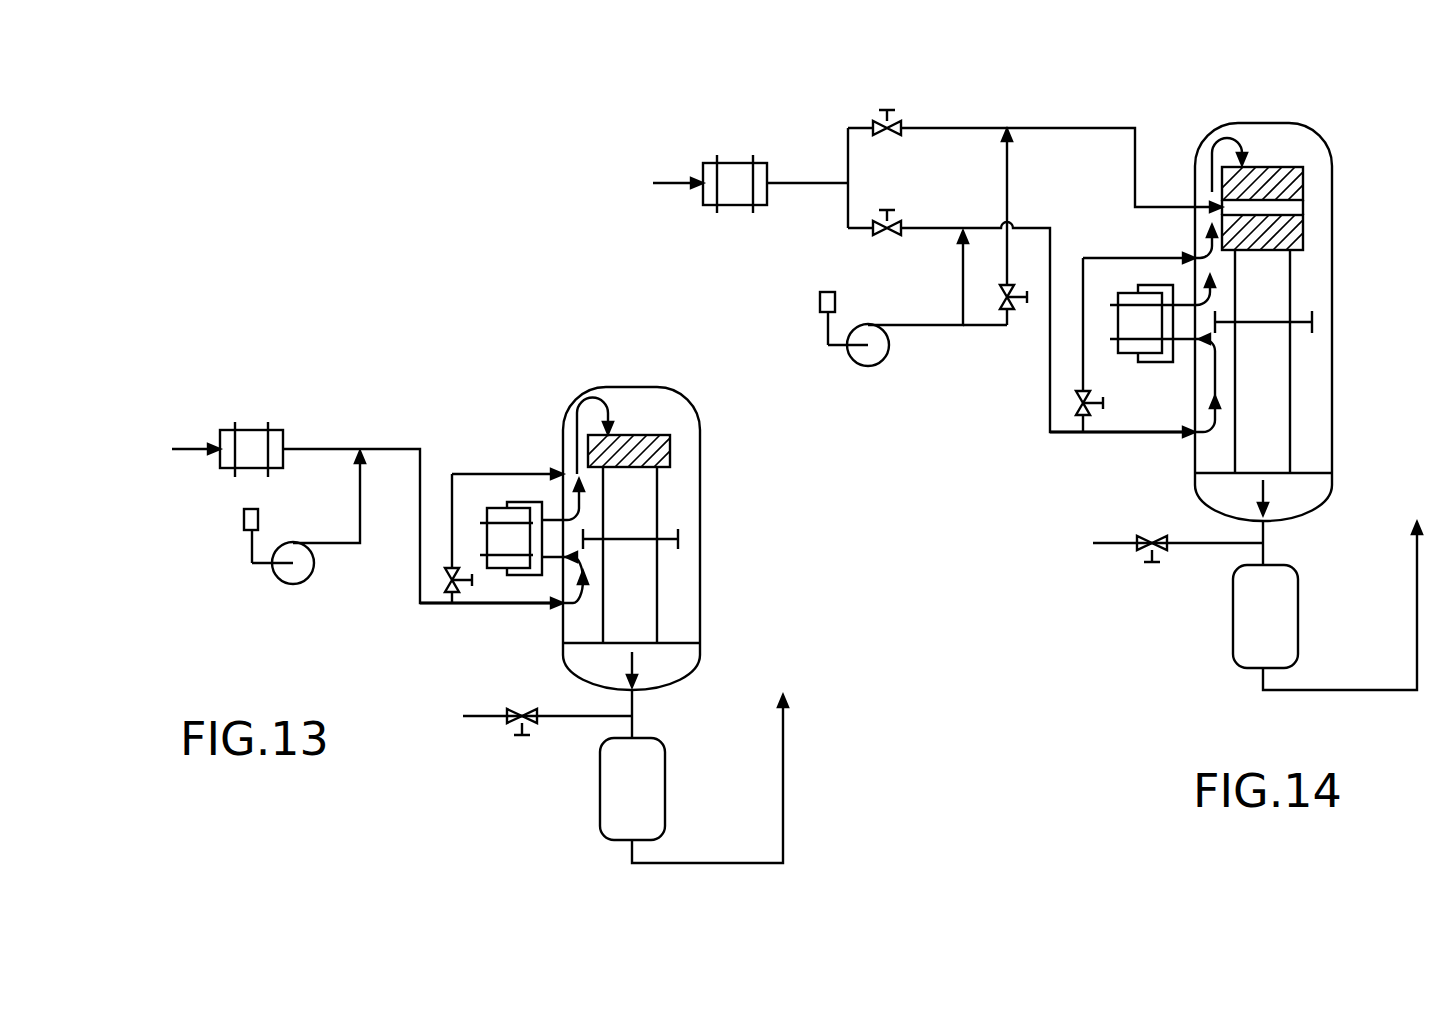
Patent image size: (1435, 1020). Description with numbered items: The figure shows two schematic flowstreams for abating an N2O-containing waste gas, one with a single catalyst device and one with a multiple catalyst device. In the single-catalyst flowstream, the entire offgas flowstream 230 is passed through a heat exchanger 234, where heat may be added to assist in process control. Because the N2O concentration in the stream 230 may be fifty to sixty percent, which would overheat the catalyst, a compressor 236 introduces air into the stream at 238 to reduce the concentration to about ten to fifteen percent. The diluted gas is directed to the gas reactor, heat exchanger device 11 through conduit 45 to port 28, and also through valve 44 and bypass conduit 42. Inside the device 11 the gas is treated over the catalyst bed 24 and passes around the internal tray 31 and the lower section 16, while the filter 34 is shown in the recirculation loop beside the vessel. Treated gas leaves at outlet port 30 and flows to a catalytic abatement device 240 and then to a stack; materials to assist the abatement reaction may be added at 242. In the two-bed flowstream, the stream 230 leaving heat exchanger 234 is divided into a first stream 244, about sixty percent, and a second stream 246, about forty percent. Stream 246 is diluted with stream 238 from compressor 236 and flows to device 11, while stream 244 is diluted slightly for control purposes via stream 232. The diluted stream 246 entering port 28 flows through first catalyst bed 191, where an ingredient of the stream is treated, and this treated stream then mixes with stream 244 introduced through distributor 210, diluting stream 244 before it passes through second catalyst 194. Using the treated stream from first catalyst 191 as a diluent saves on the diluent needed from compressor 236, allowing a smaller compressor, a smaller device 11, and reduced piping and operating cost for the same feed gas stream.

In FIG. 13, the gas reactor, heat exchanger device 11 is at (702, 563).
In FIG. 14, the gas reactor, heat exchanger device 11 is at (1335, 352).
In FIG. 13, the vessel bottom / lower outlet section 16 is at (683, 648).
In FIG. 14, the vessel bottom / lower outlet section 16 is at (1312, 477).
In FIG. 13, the catalyst bed / draft tube 24 is at (642, 468).
In FIG. 14, the catalyst bed / draft tube 24 is at (1275, 251).
In FIG. 13, the port 28 is at (557, 607).
In FIG. 14, the port 28 is at (1190, 437).
In FIG. 13, the outlet port 30 is at (638, 698).
In FIG. 14, the outlet port 30 is at (1268, 525).
In FIG. 13, the tray / support 31 is at (640, 537).
In FIG. 14, the tray / support 31 is at (1275, 320).
In FIG. 13, the filter 34 is at (487, 508).
In FIG. 14, the filter 34 is at (1125, 292).
In FIG. 13, the bypass conduit 42 is at (538, 472).
In FIG. 14, the bypass conduit 42 is at (1160, 256).
In FIG. 13, the valve 44 is at (477, 586).
In FIG. 14, the valve 44 is at (1108, 408).
In FIG. 13, the conduit 45 is at (426, 606).
In FIG. 14, the conduit 45 is at (1062, 434).
In FIG. 14, the first catalyst bed 191 is at (1303, 192).
In FIG. 14, the second catalyst 194 is at (1292, 238).
In FIG. 14, the distributor 210 is at (1216, 206).
In FIG. 13, the offgas flowstream 230 is at (190, 443).
In FIG. 14, the offgas flowstream 230 is at (668, 180).
In FIG. 14, the stream 232 is at (1009, 126).
In FIG. 13, the heat exchanger 234 is at (253, 430).
In FIG. 14, the heat exchanger 234 is at (748, 163).
In FIG. 13, the compressor 236 is at (299, 584).
In FIG. 14, the compressor 236 is at (868, 368).
In FIG. 13, the stream 238 is at (361, 445).
In FIG. 14, the stream 238 is at (963, 232).
In FIG. 13, the catalytic abatement device 240 is at (601, 820).
In FIG. 14, the catalytic abatement device 240 is at (1233, 648).
In FIG. 13, the addition point 242 is at (626, 719).
In FIG. 14, the addition point 242 is at (1258, 546).
In FIG. 14, the first stream 244 is at (865, 126).
In FIG. 14, the second stream 246 is at (848, 220).